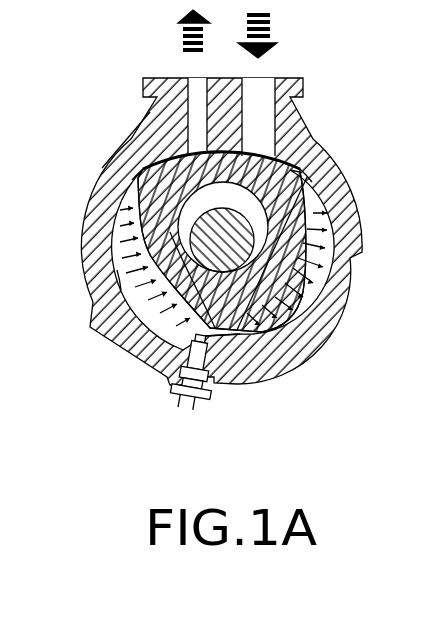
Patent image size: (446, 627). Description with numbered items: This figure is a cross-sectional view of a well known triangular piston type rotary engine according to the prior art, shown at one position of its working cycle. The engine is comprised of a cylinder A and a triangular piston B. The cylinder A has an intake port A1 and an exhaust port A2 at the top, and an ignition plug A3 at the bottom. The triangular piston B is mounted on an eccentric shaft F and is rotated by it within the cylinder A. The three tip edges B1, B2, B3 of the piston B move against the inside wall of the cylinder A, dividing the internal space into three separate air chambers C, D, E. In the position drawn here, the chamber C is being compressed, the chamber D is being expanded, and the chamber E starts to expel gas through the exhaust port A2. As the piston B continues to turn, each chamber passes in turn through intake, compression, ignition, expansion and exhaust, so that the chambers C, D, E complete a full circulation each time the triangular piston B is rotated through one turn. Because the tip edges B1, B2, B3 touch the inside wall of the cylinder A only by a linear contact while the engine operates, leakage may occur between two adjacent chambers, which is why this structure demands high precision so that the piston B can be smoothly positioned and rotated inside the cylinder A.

The cylinder A is at (343, 177).
The intake port A1 is at (260, 83).
The exhaust port A2 is at (190, 83).
The ignition plug A3 is at (175, 393).
The triangular piston B is at (300, 366).
The tip edge B1 is at (310, 155).
The tip edge B2 is at (233, 383).
The tip edge B3 is at (112, 183).
The air chamber C is at (247, 262).
The air chamber D is at (110, 280).
The air chamber E is at (143, 133).
The eccentric shaft F is at (250, 237).